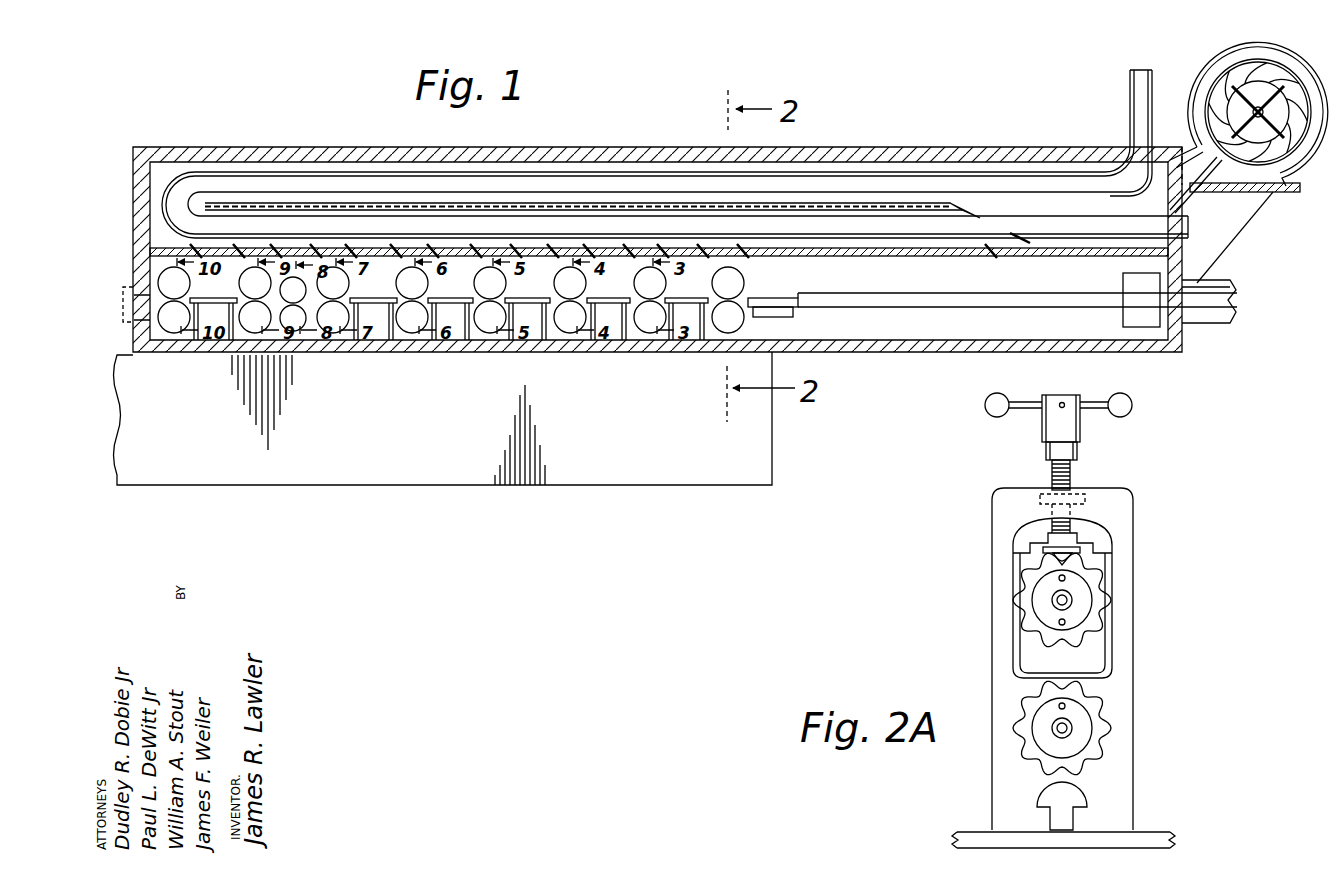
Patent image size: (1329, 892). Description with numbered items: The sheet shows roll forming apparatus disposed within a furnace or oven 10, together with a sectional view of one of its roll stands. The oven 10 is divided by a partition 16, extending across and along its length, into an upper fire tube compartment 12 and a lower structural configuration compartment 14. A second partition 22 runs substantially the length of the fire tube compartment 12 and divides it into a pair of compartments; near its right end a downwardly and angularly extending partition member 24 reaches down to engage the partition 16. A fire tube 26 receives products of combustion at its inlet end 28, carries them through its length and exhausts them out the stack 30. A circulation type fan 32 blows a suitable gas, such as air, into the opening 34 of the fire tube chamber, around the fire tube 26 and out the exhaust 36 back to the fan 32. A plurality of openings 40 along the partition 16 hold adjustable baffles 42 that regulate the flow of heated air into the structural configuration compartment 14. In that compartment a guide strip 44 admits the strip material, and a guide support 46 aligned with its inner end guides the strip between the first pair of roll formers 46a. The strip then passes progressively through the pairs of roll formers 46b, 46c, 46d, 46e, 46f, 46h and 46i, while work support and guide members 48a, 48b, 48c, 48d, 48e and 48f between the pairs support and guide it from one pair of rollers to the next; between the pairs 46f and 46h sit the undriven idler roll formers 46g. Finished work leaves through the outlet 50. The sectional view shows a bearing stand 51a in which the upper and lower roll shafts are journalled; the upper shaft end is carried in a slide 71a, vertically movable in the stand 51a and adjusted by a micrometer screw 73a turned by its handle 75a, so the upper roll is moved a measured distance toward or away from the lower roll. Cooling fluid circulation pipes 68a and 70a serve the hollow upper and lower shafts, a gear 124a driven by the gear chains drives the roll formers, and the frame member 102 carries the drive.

In FIG. 1, the furnace or oven 10 is at (657, 229).
In FIG. 1, the fire tube compartment 12 is at (930, 160).
In FIG. 1, the structural configuration compartment 14 is at (906, 329).
In FIG. 1, the partition 16 is at (829, 252).
In FIG. 1, the partition 22 is at (866, 200).
In FIG. 1, the partition member 24 is at (966, 212).
In FIG. 1, the fire tube 26 is at (1078, 220).
In FIG. 1, the inner tube 28 is at (1190, 225).
In FIG. 1, the stack 30 is at (1130, 84).
In FIG. 1, the circulation type fan 32 is at (1283, 190).
In FIG. 1, the opening 34 is at (1166, 181).
In FIG. 1, the exhaust 36 is at (1123, 279).
In FIG. 1, the openings 40 is at (355, 246).
In FIG. 1, the adjustable baffles 42 is at (203, 246).
In FIG. 1, the guide strip 44 is at (1014, 300).
In FIG. 1, the guide support 46 is at (772, 298).
In FIG. 1, the pair of roll formers 46a is at (745, 284).
In FIG. 1, the pair of roll formers 46b is at (653, 296).
In FIG. 1, the pair of roll formers 46c is at (574, 296).
In FIG. 1, the pair of roll formers 46d is at (492, 296).
In FIG. 1, the pair of roll formers 46e is at (414, 296).
In FIG. 1, the pair of roll formers 46f is at (336, 296).
In FIG. 1, the idler roll formers 46g is at (293, 296).
In FIG. 1, the pair of roll formers 46h is at (256, 292).
In FIG. 1, the pair of roll formers 46i is at (172, 300).
In FIG. 1, the work support and guide member 48a is at (704, 298).
In FIG. 1, the work support and guide member 48b is at (626, 298).
In FIG. 1, the work support and guide member 48c is at (546, 298).
In FIG. 1, the work support and guide member 48d is at (469, 298).
In FIG. 1, the work support and guide member 48e is at (393, 298).
In FIG. 1, the work support and guide member 48f is at (233, 298).
In FIG. 1, the outlet 50 is at (136, 306).
In FIG. 2A, the bearing stand 51a is at (1122, 648).
In FIG. 2A, the cooling fluid circulation pipe 68a is at (1075, 600).
In FIG. 2A, the cooling fluid circulation pipe 70a is at (1075, 728).
In FIG. 2A, the slide 71a is at (1100, 567).
In FIG. 2A, the micrometer screw 73a is at (1075, 480).
In FIG. 2A, the handle 75a is at (1133, 405).
In FIG. 2A, the frame member 102 is at (1145, 835).
In FIG. 2A, the gear 124a is at (1108, 575).